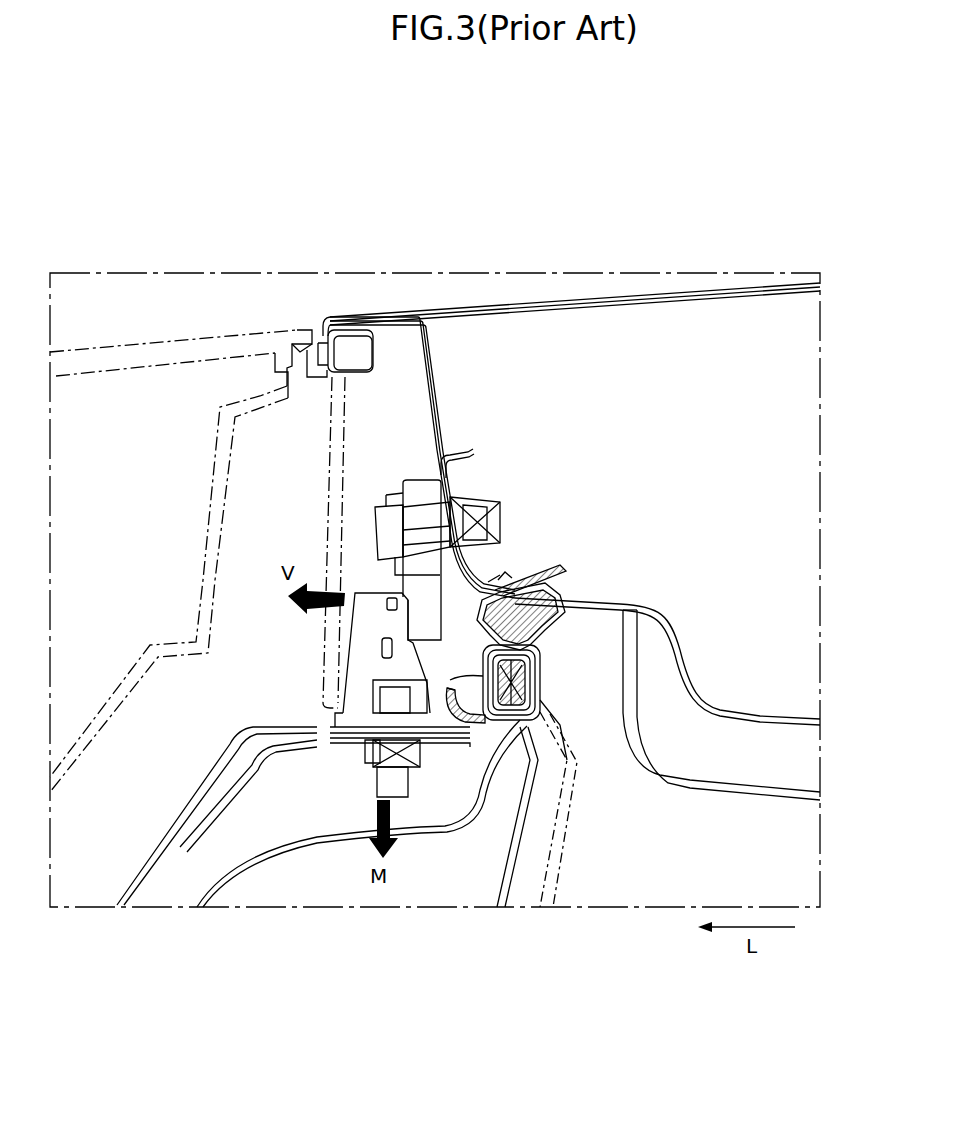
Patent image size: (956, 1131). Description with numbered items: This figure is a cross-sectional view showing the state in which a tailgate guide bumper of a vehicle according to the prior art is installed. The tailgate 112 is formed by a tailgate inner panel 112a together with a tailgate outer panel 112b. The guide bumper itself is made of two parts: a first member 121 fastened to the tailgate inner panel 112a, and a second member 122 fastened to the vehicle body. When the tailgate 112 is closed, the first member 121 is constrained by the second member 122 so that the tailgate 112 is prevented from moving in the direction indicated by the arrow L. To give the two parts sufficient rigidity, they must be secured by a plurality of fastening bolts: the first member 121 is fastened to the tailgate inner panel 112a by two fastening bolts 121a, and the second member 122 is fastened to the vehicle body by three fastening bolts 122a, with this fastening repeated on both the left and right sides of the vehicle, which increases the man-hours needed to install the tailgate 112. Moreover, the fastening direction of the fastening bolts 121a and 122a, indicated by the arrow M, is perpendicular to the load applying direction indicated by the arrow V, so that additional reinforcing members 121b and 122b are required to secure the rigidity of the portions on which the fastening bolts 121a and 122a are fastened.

The tailgate 112 is at (572, 190).
The tailgate inner panel 112a is at (431, 350).
The tailgate outer panel 112b is at (583, 300).
The first member 121 is at (400, 448).
The fastening bolts 121a is at (490, 515).
The reinforcing member 121b is at (460, 450).
The second member 122 is at (362, 625).
The fastening bolts 122a is at (400, 782).
The reinforcing member 122b is at (263, 760).